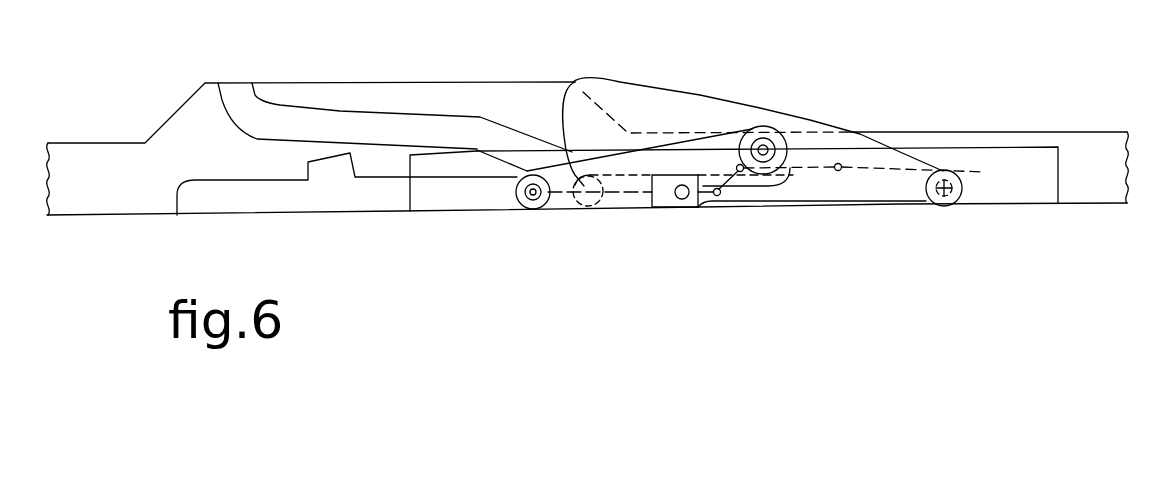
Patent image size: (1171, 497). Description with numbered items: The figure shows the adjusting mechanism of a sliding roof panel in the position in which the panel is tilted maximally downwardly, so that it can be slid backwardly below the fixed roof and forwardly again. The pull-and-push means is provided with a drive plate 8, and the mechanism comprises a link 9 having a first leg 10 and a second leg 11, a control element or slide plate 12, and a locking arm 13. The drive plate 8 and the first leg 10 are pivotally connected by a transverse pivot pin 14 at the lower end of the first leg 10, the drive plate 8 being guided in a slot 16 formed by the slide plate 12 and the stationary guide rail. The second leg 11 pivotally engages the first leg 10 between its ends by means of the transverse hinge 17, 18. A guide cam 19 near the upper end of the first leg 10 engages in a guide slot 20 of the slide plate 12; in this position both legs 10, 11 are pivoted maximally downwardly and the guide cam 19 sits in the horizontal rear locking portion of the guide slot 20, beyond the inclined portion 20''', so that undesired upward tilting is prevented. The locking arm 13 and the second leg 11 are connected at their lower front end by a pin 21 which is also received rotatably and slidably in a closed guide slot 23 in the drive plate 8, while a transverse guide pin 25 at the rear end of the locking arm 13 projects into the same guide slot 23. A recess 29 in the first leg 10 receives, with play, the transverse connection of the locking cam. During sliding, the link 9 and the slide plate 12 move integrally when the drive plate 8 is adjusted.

The drive plate 8 is at (460, 197).
The link 9 is at (713, 93).
The first leg 10 is at (661, 113).
The second leg 11 is at (743, 130).
The slide plate 12 is at (202, 125).
The locking arm 13 is at (640, 208).
The pivot pin 14 is at (944, 206).
The slot 16 is at (383, 197).
The transverse hinge 17 is at (816, 101).
The transverse hinge 18 is at (767, 140).
The guide cam 19 is at (607, 205).
The guide slot 20 is at (412, 83).
The forwardly and upwardly inclined portion 20''' is at (594, 237).
The pin 21 is at (530, 200).
The guide slot 23 is at (658, 207).
The guide pin 25 is at (687, 198).
The recess 29 is at (707, 205).